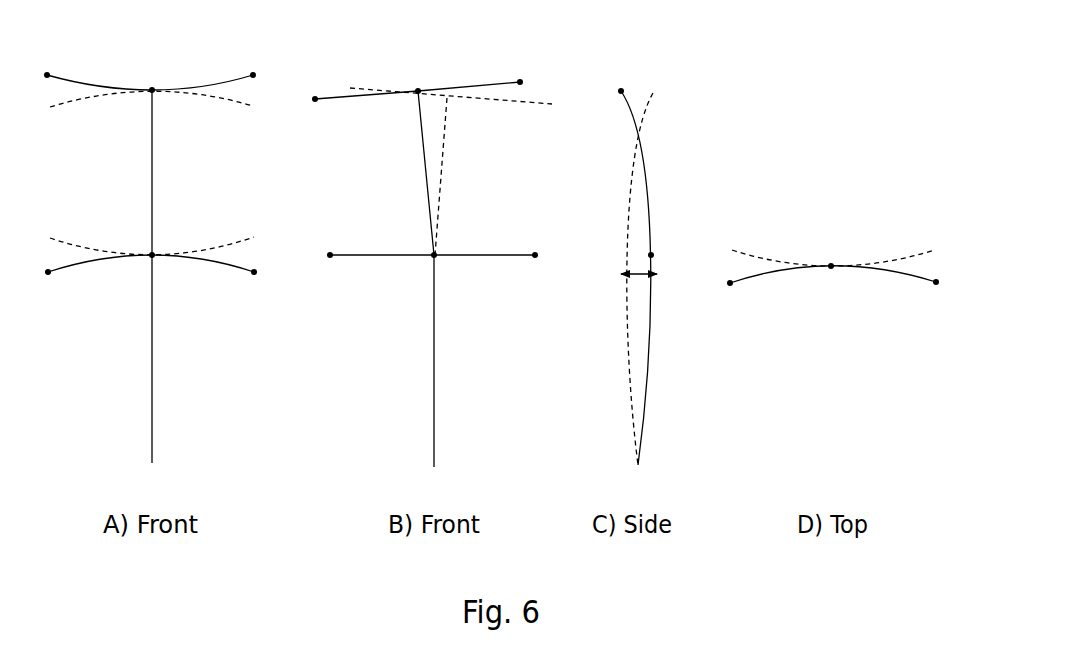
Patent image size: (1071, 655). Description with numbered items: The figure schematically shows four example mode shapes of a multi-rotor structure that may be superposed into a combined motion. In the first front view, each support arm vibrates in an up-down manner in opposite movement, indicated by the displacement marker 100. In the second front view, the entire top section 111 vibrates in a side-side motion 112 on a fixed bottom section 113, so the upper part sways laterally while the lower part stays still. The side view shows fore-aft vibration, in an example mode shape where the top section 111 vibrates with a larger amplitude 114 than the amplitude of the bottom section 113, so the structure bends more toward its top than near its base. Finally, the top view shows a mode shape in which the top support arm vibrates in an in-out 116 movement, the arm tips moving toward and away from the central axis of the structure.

The vertical displacement of the member 100 is at (268, 66).
The top section 111 is at (422, 143).
The side-side motion 112 is at (462, 62).
The bottom section 113 is at (434, 329).
The amplitude 114 is at (667, 63).
The in-out movement 116 is at (953, 241).